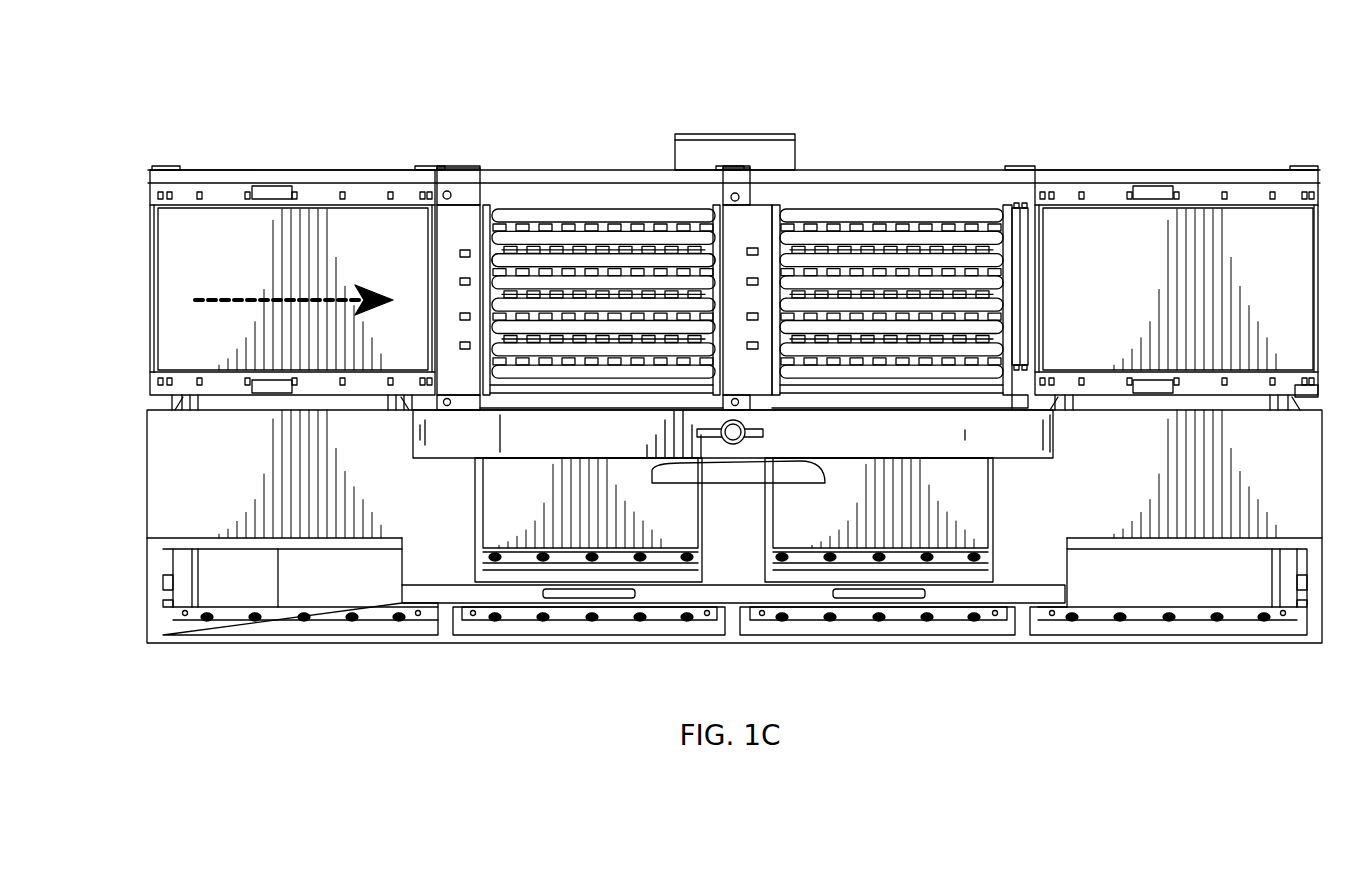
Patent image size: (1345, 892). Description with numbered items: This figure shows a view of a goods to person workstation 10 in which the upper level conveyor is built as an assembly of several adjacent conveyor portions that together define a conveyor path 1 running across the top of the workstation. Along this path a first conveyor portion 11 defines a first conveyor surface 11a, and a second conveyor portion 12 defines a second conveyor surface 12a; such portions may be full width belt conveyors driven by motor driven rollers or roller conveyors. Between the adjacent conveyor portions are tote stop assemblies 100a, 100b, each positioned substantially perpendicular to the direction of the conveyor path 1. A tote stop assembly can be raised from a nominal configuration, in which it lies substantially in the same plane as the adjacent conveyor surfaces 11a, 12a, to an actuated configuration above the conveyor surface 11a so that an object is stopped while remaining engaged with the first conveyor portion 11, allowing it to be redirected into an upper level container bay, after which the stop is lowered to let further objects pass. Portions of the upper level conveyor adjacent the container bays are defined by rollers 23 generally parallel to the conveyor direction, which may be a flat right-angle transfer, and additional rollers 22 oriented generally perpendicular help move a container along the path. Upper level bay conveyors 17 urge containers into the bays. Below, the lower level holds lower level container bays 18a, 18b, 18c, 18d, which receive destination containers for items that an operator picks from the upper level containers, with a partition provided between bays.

The goods to person workstation 10 is at (1075, 46).
The conveyor path 1 is at (250, 297).
The first conveyor portion 11 is at (356, 212).
The first conveyor surface 11a is at (297, 257).
The tote stop assembly 100a is at (465, 250).
The second conveyor portion 12 is at (623, 238).
The second conveyor surface 12a is at (563, 260).
The tote stop assembly 100b is at (750, 247).
The rollers 23 is at (852, 260).
The rollers 22 is at (1035, 247).
The upper level bay conveyor 17 is at (537, 515).
The lower level container bay 18a is at (1190, 587).
The lower level container bay 18b is at (850, 612).
The lower level container bay 18c is at (620, 613).
The lower level container bay 18d is at (287, 577).